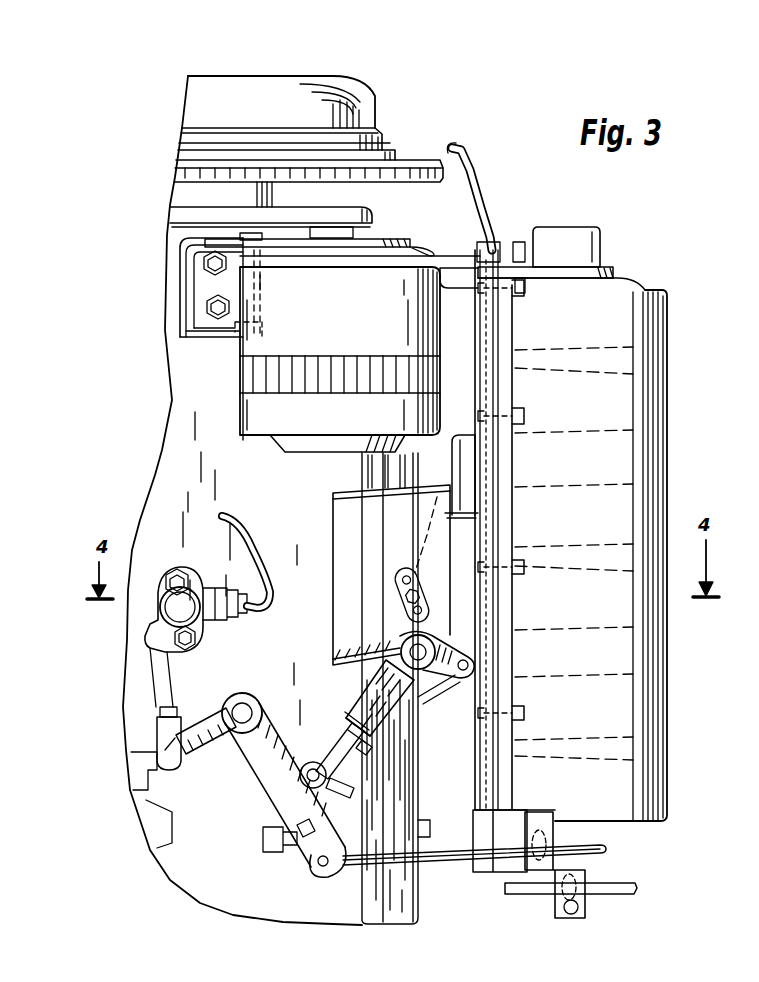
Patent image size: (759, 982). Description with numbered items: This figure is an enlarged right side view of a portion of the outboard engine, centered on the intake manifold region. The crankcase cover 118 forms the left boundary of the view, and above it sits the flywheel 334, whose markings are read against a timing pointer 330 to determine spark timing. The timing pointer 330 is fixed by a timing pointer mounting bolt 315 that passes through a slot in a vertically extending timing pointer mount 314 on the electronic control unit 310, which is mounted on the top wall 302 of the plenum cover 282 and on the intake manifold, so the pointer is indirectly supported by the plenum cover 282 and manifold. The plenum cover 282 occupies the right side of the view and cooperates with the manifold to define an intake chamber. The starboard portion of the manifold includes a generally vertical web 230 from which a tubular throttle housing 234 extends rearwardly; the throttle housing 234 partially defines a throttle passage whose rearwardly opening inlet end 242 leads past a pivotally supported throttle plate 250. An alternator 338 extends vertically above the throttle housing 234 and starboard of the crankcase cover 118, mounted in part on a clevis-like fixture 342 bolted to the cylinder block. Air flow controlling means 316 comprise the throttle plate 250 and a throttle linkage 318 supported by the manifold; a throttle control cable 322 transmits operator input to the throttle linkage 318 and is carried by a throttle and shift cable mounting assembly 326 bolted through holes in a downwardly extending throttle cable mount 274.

The crankcase cover 118 is at (180, 407).
The flywheel 334 is at (428, 165).
The timing pointer 330 is at (478, 181).
The timing pointer mount 314 is at (490, 243).
The timing pointer mounting bolt 315 is at (523, 240).
The electronic control unit 310 is at (592, 238).
The top wall 302 is at (607, 275).
The plenum cover 282 is at (667, 297).
The web 230 is at (488, 739).
The clevis-like fixture 342 is at (212, 328).
The alternator 338 is at (362, 317).
The inlet end 242 is at (332, 503).
The throttle plate 250 is at (425, 536).
The throttle housing 234 is at (334, 638).
The air flow controlling means 316 is at (260, 791).
The throttle linkage 318 is at (306, 835).
The throttle control cable 322 is at (598, 848).
The throttle and shift cable mounting assembly 326 is at (585, 870).
The throttle cable mount 274 is at (483, 862).